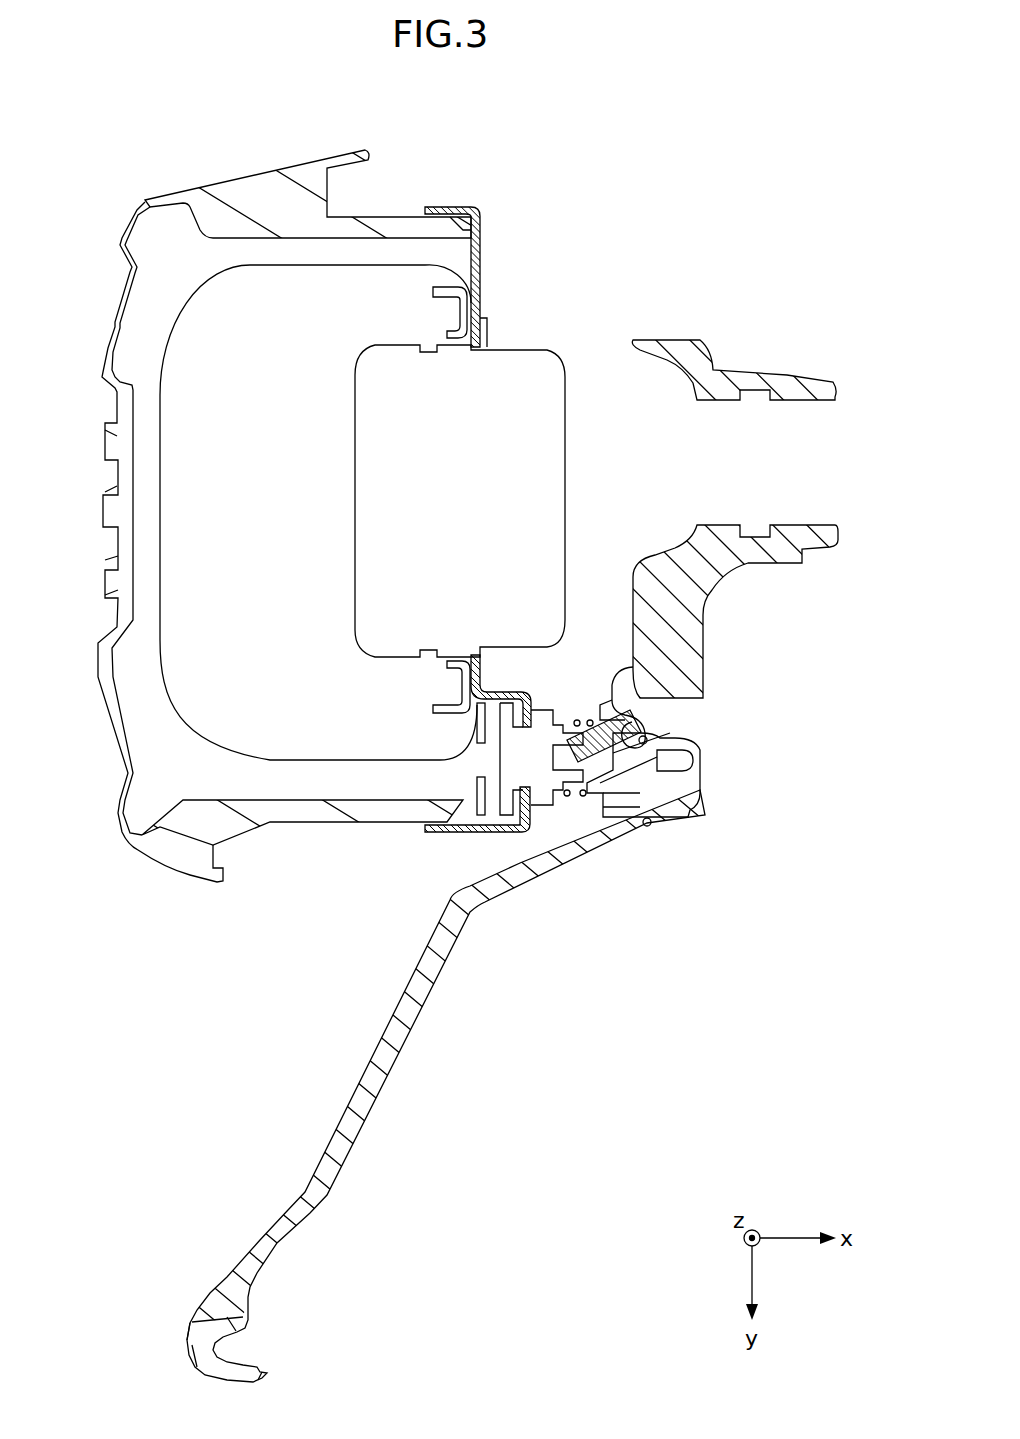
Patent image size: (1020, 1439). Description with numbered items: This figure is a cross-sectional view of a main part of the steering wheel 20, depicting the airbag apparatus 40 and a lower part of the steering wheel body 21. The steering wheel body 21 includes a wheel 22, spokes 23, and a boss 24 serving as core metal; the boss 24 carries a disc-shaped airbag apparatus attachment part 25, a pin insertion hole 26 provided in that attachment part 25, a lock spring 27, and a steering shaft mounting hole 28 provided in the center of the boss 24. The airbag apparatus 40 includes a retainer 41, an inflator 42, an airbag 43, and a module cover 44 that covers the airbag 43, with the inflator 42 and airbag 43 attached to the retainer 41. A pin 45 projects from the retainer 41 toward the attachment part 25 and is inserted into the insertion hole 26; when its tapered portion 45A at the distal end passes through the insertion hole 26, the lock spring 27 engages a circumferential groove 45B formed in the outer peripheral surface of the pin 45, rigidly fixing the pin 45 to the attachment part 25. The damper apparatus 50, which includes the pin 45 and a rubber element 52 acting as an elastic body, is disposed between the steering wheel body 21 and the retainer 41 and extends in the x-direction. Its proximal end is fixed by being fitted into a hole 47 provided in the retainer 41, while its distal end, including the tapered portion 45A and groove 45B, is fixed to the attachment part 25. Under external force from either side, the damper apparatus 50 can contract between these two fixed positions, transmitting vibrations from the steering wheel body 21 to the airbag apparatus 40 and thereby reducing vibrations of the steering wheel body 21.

The steering wheel 20 is at (88, 168).
The steering wheel body 21 is at (535, 1088).
The wheel 22 is at (185, 1335).
The spokes 23 is at (397, 993).
The boss 24 is at (792, 350).
The airbag apparatus attachment part 25 is at (705, 641).
The pin insertion hole 26 is at (622, 732).
The lock spring 27 is at (625, 736).
The steering shaft mounting hole 28 is at (780, 473).
The airbag apparatus 40 is at (90, 334).
The retainer 41 is at (480, 243).
The inflator 42 is at (535, 373).
The airbag 43 is at (203, 687).
The module cover 44 is at (240, 196).
The pin 45 is at (705, 758).
The tapered portion 45A is at (670, 760).
The groove 45B is at (640, 768).
The hole 47 is at (515, 742).
The damper apparatus 50 is at (580, 815).
The rubber element 52 is at (520, 795).